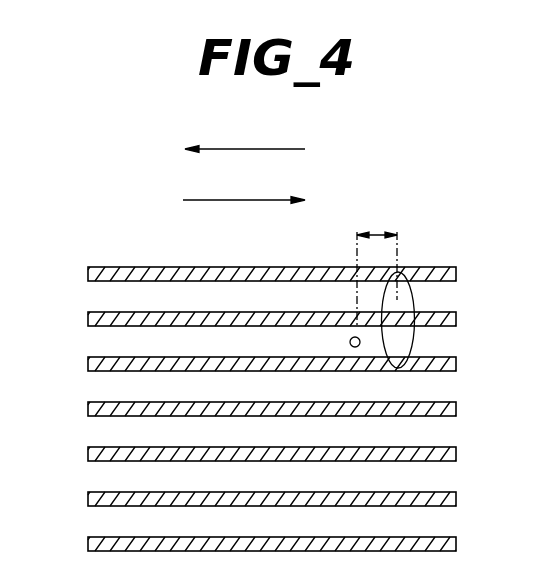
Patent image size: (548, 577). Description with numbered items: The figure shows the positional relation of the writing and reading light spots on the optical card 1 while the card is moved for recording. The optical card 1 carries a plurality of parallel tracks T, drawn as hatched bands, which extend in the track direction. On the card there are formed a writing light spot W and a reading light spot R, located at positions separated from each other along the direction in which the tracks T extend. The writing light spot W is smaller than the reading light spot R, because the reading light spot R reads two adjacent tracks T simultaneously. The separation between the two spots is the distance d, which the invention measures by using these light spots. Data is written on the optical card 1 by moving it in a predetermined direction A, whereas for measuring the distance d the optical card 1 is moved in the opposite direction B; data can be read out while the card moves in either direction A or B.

The optical card 1 is at (258, 409).
The tracks T is at (100, 295).
The writing light spot W is at (351, 338).
The reading light spot R is at (414, 298).
The distance d is at (377, 224).
The direction A is at (257, 148).
The direction B is at (230, 198).